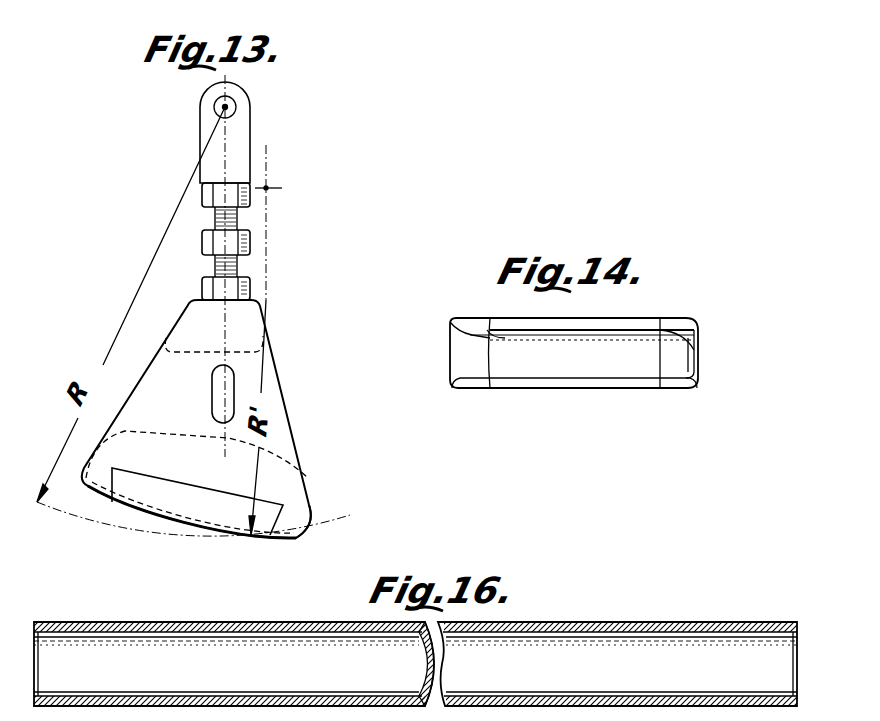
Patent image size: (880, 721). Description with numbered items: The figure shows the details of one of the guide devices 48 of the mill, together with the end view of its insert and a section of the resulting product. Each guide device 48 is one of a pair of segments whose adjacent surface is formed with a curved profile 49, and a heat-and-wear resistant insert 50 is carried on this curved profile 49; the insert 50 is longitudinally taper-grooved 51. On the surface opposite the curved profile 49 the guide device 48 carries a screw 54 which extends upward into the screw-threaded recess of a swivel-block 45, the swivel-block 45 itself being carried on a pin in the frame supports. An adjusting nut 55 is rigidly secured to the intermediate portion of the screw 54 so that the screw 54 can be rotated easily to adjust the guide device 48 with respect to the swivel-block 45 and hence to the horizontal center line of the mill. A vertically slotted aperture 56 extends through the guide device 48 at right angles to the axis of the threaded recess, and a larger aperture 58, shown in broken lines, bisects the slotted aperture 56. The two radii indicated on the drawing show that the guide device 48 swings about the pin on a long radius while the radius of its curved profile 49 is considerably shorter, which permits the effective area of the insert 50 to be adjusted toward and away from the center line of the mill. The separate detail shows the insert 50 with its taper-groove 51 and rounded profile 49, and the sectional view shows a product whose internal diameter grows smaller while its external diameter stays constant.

In FIG. 13, the swivel-block 45 is at (237, 142).
In FIG. 13, the guide device 48 is at (289, 443).
In FIG. 14, the guide device 48 is at (680, 325).
In FIG. 13, the curved profile 49 is at (310, 517).
In FIG. 14, the curved profile 49 is at (673, 370).
In FIG. 13, the heat-and-wear resistant insert 50 is at (178, 508).
In FIG. 14, the heat-and-wear resistant insert 50 is at (550, 380).
In FIG. 13, the longitudinal taper-groove 51 is at (208, 527).
In FIG. 14, the longitudinal taper-groove 51 is at (505, 336).
In FIG. 13, the screw 54 is at (215, 262).
In FIG. 13, the adjusting nut 55 is at (247, 243).
In FIG. 13, the vertically slotted aperture 56 is at (212, 378).
In FIG. 13, the aperture 58 is at (186, 432).